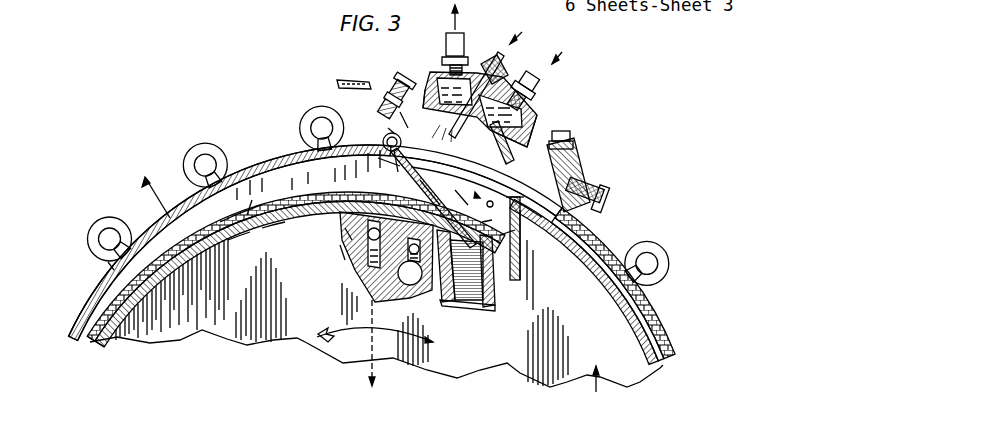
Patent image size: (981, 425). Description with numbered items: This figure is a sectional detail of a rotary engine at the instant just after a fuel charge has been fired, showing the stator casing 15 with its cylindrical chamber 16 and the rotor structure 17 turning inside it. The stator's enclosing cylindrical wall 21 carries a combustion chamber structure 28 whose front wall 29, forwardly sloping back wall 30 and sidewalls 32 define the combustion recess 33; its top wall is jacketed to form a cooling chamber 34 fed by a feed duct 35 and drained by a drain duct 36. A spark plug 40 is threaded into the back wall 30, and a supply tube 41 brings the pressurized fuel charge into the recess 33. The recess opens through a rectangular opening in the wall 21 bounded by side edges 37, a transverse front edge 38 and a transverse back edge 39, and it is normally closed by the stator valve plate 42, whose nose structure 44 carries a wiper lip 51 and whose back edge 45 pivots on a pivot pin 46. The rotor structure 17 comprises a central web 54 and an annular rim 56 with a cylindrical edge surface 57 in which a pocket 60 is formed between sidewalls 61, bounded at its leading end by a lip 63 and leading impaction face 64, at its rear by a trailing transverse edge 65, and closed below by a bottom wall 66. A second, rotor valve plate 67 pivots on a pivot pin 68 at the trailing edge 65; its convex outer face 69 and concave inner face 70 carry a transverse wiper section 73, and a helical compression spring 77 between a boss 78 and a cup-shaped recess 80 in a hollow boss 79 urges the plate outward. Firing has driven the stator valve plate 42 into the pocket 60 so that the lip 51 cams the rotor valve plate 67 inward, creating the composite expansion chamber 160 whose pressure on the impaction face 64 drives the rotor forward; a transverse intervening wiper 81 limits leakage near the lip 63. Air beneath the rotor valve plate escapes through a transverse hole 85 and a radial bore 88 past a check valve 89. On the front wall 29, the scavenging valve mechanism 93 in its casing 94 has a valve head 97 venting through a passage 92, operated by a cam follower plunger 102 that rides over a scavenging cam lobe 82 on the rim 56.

The stator casing 15 is at (660, 312).
The cylindrical chamber 16 is at (85, 312).
The rotor structure 17 is at (298, 340).
The cylindrical wall 21 is at (96, 287).
The combustion chamber structure 28 is at (560, 111).
The front wall 29 is at (532, 135).
The forwardly sloping back wall 30 is at (414, 110).
The sidewalls 32 is at (442, 131).
The combustion space or recess 33 is at (425, 105).
The cooling chamber 34 is at (548, 104).
The feed duct 35 is at (544, 84).
The drain duct 36 is at (460, 46).
The side edges 37 is at (398, 152).
The transverse front edge 38 is at (503, 160).
The transverse back edge 39 is at (382, 140).
The spark plug 40 is at (382, 84).
The supply tube 41 is at (506, 60).
The valve plate 42 is at (424, 170).
The transverse front edge or nose structure 44 is at (448, 183).
The transverse back edge 45 is at (382, 165).
The pivot pin 46 is at (388, 130).
The wiper lip 51 is at (482, 226).
The central web 54 is at (597, 389).
The annular rim 56 is at (665, 359).
The cylindrical edge surface 57 is at (82, 345).
The pocket 60 is at (237, 235).
The sidewalls 61 is at (316, 199).
The transverse edge or overhanging lip 63 is at (480, 202).
The leading impaction face 64 is at (515, 236).
The trailing transverse edge 65 is at (178, 258).
The bottom wall 66 is at (260, 215).
The second valve plate 67 is at (203, 200).
The pivot pin 68 is at (158, 230).
The outer face 69 is at (256, 212).
The inner face 70 is at (272, 212).
The transverse wiper section 73 is at (522, 252).
The helical compression spring 77 is at (468, 300).
The boss 78 is at (446, 288).
The hollow boss 79 is at (480, 308).
The cup-shaped recess 80 is at (478, 285).
The transverse intervening wiper 81 is at (516, 228).
The scavenging cam lobe 82 is at (110, 263).
The transverse hole 85 is at (405, 283).
The radial bore 88 is at (340, 258).
The spring-biased check valve 89 is at (340, 238).
The passage 92 is at (560, 135).
The scavenging valve and operating mechanism 93 is at (580, 170).
The casing 94 is at (592, 180).
The valve head 97 is at (478, 148).
The cam follower plunger 102 is at (600, 192).
The composite expansion chamber 160 is at (482, 198).